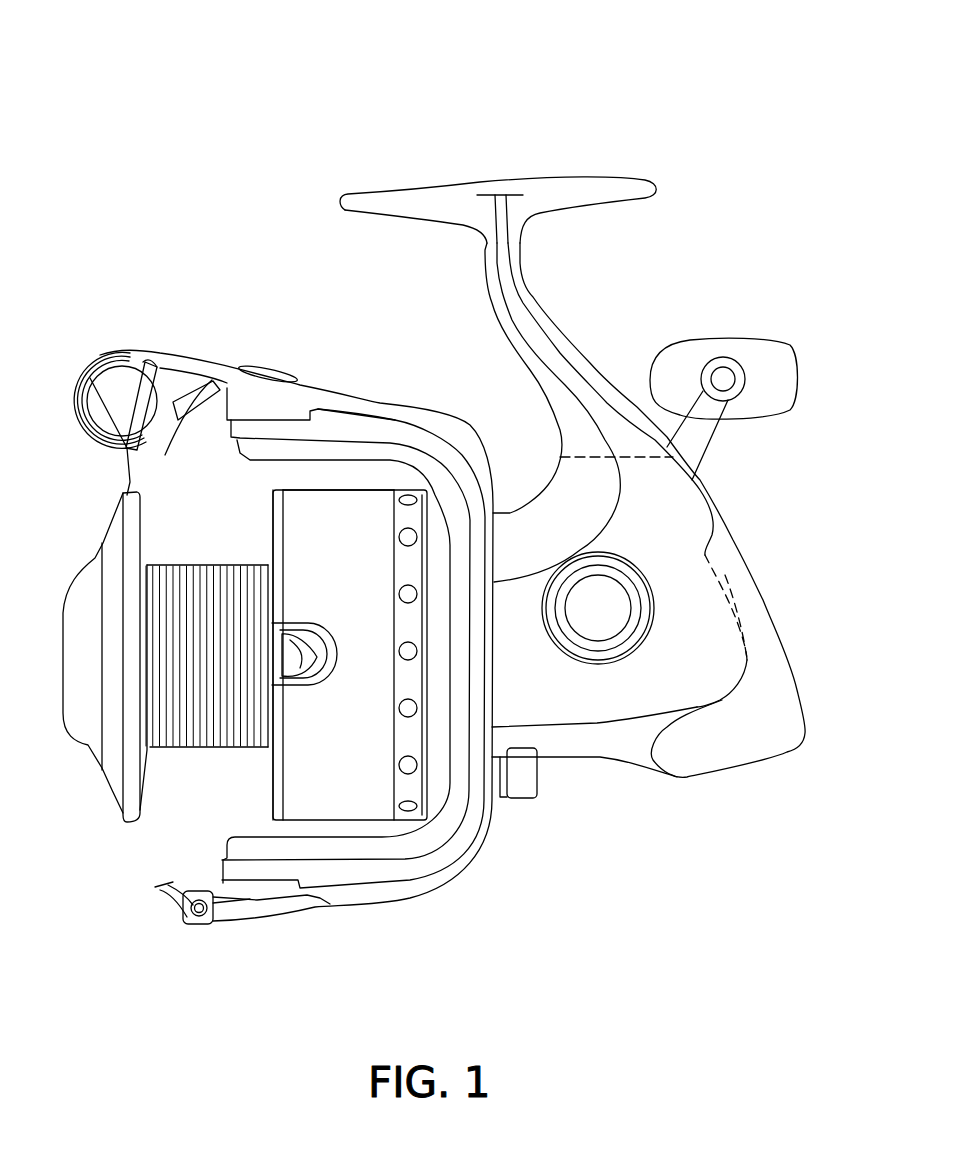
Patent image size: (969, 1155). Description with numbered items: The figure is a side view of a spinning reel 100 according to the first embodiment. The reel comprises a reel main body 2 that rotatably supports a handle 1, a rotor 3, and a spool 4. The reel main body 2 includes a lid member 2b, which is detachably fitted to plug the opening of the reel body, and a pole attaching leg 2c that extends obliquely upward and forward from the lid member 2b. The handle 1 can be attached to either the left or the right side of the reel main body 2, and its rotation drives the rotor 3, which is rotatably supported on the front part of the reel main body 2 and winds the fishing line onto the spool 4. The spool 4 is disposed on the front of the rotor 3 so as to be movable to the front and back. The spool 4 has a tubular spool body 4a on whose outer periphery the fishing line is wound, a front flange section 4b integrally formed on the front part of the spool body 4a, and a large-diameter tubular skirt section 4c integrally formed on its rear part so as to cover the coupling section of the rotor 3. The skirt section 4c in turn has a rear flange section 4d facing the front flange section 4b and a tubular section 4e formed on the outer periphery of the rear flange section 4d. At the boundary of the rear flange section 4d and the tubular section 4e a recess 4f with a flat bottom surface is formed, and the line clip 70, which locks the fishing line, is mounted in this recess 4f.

The spinning reel 100 is at (491, 132).
The handle 1 is at (730, 352).
The reel main body 2 is at (610, 335).
The lid member 2b is at (673, 527).
The pole attaching leg 2c is at (518, 283).
The rotor 3 is at (425, 848).
The spool 4 is at (178, 762).
The spool body 4a is at (222, 574).
The front flange section 4b is at (90, 378).
The skirt section 4c is at (325, 473).
The rear flange section 4d is at (252, 530).
The tubular section 4e is at (350, 500).
The recess 4f is at (280, 642).
The line clip 70 is at (310, 658).